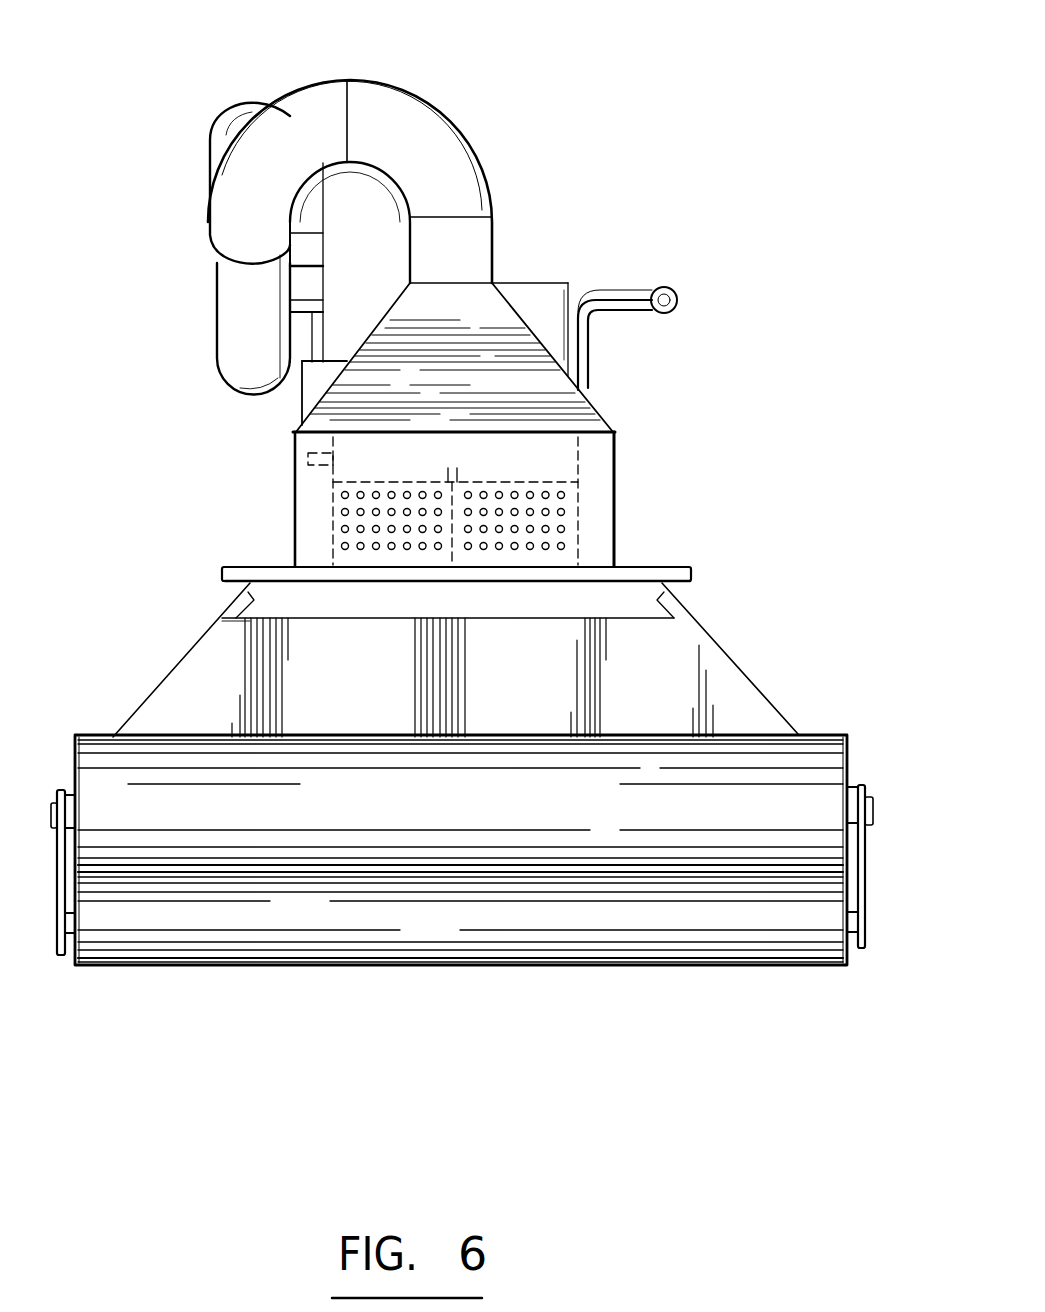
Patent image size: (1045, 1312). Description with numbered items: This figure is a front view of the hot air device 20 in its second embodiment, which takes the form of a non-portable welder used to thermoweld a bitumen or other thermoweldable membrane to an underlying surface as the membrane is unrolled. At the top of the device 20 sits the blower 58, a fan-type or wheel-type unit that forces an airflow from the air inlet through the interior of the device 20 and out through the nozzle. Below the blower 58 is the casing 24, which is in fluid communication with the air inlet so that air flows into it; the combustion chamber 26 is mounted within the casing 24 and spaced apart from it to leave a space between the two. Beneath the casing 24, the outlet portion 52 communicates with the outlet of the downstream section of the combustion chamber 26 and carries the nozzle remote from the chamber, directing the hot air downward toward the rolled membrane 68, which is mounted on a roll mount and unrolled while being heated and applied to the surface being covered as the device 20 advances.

The hot air device 20 is at (531, 100).
The casing 24 is at (617, 443).
The combustion chamber 26 is at (585, 514).
The outlet portion 52 is at (703, 648).
The blower 58 is at (233, 98).
The rolled membrane 68 is at (818, 737).